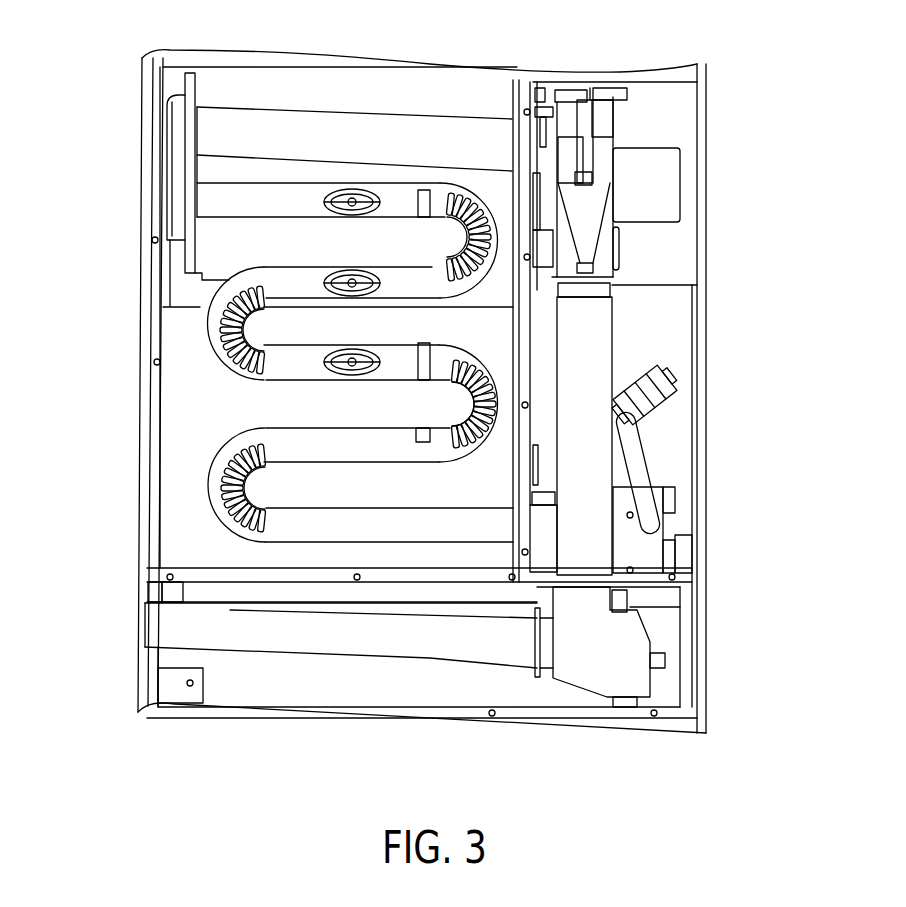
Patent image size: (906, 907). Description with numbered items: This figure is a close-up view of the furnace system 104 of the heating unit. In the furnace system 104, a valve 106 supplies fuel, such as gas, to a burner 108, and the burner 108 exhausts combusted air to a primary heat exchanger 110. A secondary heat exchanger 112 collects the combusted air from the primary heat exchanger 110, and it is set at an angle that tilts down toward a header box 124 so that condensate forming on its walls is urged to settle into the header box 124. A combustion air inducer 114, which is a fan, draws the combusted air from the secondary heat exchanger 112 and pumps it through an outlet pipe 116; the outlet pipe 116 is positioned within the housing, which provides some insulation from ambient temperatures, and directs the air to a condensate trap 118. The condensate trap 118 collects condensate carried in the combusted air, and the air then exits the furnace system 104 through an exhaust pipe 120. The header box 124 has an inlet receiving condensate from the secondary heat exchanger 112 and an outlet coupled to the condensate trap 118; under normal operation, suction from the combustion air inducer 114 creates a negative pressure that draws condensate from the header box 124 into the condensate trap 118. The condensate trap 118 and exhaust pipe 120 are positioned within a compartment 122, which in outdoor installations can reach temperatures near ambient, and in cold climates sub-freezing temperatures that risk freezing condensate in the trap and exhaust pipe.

The furnace system 104 is at (104, 98).
The valve 106 is at (660, 393).
The burner 108 is at (648, 560).
The primary heat exchanger 110 is at (315, 520).
The secondary heat exchanger 112 is at (357, 140).
The combustion air inducer 114 is at (598, 254).
The outlet pipe 116 is at (598, 350).
The condensate trap 118 is at (602, 667).
The exhaust pipe 120 is at (323, 635).
The compartment 122 is at (430, 682).
The header box 124 is at (538, 95).